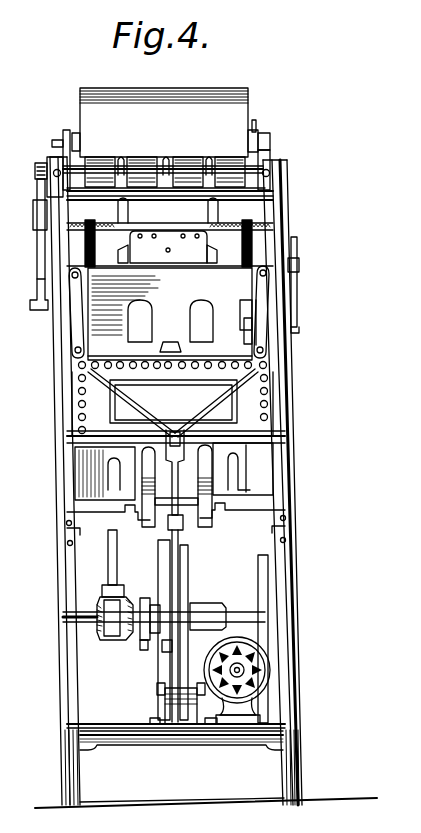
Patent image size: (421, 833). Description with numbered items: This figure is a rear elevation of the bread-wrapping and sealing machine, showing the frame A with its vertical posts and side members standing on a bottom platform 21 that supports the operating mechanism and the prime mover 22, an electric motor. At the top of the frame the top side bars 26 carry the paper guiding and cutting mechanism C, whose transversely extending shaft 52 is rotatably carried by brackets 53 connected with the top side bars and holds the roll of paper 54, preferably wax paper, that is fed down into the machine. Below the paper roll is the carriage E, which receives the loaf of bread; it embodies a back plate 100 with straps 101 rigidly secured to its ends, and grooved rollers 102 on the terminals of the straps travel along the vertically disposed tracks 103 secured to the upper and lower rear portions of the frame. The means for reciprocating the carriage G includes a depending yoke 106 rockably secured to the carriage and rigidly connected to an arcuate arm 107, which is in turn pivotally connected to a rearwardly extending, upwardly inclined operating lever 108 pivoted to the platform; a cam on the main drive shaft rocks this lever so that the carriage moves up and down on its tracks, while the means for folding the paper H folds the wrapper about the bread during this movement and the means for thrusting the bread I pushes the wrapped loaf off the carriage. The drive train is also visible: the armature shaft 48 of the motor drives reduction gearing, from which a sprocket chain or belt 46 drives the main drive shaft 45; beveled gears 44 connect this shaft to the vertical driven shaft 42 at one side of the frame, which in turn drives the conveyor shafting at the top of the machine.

The frame A is at (290, 197).
The paper guiding and cutting mechanism C is at (178, 112).
The carriage E is at (170, 314).
The means for reciprocating the carriage G is at (179, 563).
The means for folding the paper H is at (242, 468).
The means for thrusting the bread I is at (152, 532).
The bottom platform 21 is at (160, 732).
The prime mover 22 is at (267, 678).
The top side bars 26 is at (287, 482).
The vertical driven shaft 42 is at (108, 565).
The beveled gears 44 is at (70, 637).
The main drive shaft 45 is at (116, 627).
The sprocket chain or belt 46 is at (269, 584).
The armature shaft 48 is at (246, 668).
The transversely extending shaft 52 is at (270, 135).
The brackets 53 is at (270, 152).
The roll of paper 54 is at (208, 96).
The back plate 100 is at (170, 326).
The straps 101 is at (268, 333).
The grooved rollers 102 is at (266, 268).
The tracks 103 is at (282, 373).
The depending yoke 106 is at (138, 407).
The arcuate arm 107 is at (214, 437).
The operating lever 108 is at (181, 598).